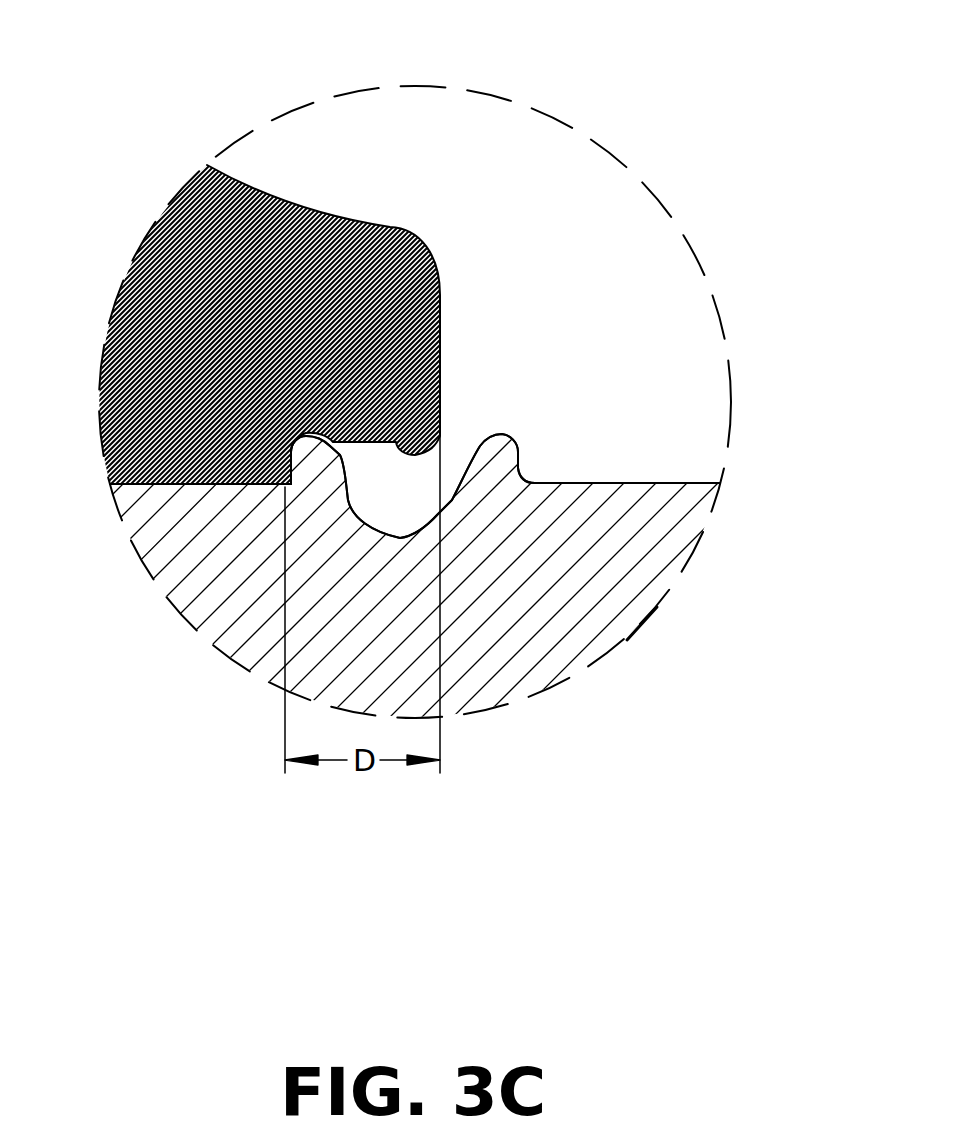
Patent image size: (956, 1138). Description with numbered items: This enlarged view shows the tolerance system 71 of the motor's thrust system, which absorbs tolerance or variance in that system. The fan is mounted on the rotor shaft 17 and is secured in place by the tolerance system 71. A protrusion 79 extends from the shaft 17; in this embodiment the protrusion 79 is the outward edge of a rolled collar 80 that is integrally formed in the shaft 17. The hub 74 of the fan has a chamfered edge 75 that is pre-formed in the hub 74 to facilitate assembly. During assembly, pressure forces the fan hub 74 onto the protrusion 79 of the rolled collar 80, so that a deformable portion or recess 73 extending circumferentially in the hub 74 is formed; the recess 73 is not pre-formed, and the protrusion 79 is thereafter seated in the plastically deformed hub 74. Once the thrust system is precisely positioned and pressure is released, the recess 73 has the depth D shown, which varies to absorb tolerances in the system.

The rotor shaft 17 is at (248, 601).
The tolerance system 71 is at (500, 343).
The recess 73 is at (347, 500).
The hub 74 is at (386, 224).
The chamfered edge 75 is at (400, 537).
The protrusion 79 is at (318, 441).
The rolled collar 80 is at (505, 435).